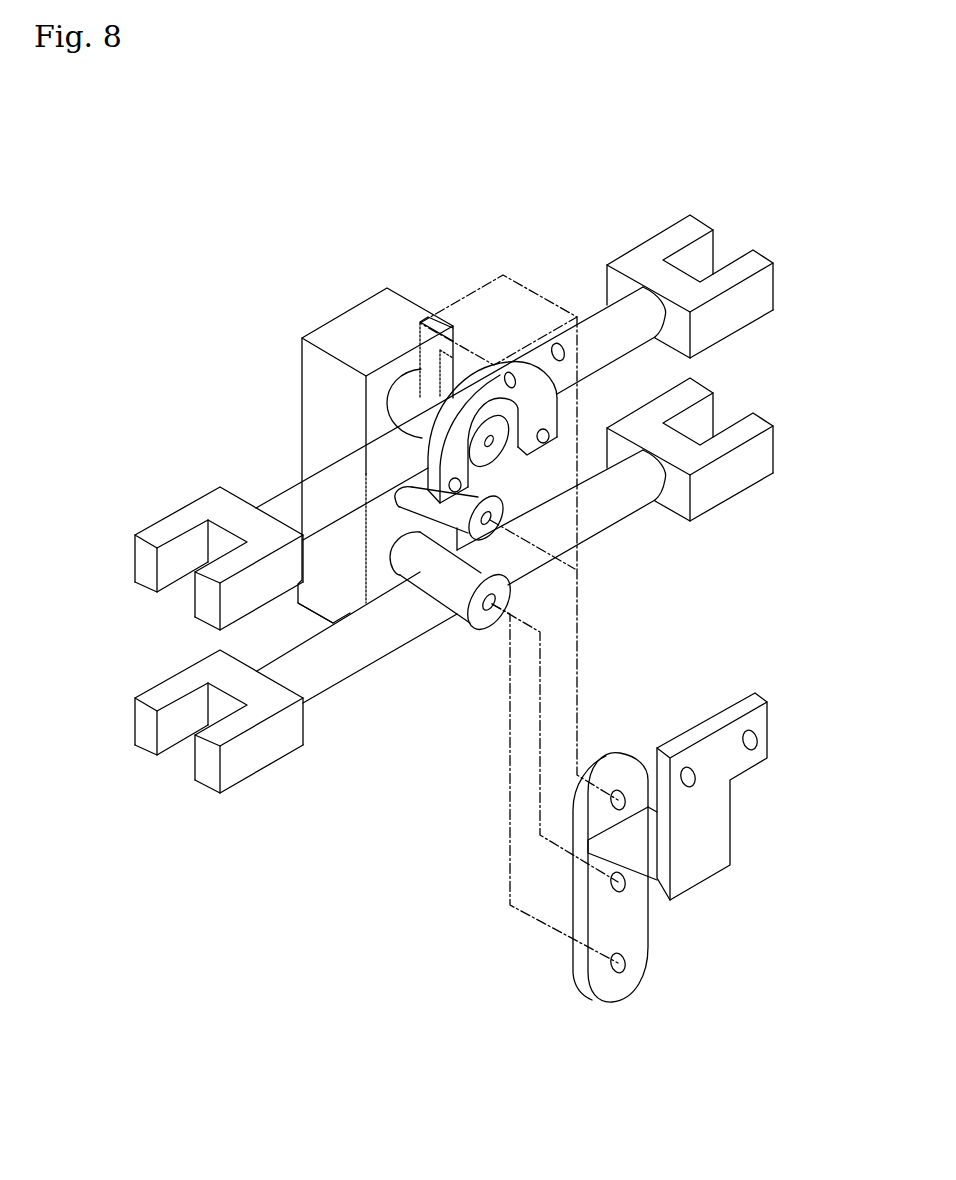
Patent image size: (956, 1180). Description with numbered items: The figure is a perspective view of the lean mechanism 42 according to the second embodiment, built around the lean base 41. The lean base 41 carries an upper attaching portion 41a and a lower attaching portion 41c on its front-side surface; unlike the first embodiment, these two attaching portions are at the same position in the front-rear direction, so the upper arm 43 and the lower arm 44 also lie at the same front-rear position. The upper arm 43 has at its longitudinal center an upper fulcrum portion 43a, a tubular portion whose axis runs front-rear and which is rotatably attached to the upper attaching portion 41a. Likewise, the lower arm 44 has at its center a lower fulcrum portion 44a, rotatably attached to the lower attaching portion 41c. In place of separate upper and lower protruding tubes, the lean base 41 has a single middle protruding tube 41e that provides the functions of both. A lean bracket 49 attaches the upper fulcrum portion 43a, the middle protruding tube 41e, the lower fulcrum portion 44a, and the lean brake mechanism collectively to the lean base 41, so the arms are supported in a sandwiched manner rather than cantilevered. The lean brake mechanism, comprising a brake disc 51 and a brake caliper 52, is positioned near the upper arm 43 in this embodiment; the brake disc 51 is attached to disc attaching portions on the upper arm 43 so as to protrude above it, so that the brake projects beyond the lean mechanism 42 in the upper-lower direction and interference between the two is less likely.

The lean mechanism 42 is at (104, 220).
The lean base 41 is at (280, 367).
The upper attaching portion 41a is at (380, 383).
The lower attaching portion 41c is at (410, 500).
The middle protruding tube 41e is at (338, 605).
The upper arm 43 is at (590, 300).
The upper fulcrum portion 43a is at (410, 378).
The lower arm 44 is at (630, 505).
The lower fulcrum portion 44a is at (490, 605).
The lean bracket 49 is at (790, 701).
The brake disc 51 is at (437, 455).
The brake caliper 52 is at (462, 300).